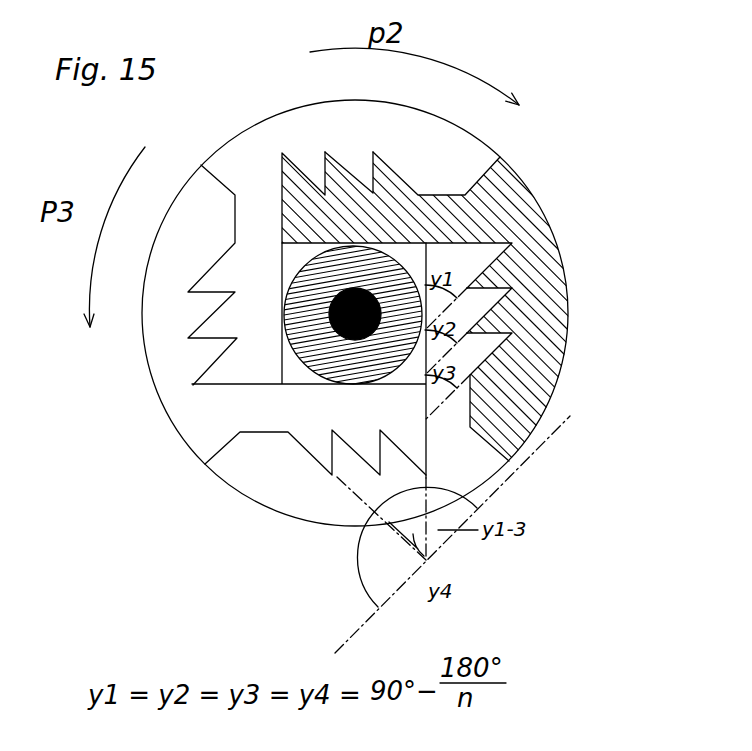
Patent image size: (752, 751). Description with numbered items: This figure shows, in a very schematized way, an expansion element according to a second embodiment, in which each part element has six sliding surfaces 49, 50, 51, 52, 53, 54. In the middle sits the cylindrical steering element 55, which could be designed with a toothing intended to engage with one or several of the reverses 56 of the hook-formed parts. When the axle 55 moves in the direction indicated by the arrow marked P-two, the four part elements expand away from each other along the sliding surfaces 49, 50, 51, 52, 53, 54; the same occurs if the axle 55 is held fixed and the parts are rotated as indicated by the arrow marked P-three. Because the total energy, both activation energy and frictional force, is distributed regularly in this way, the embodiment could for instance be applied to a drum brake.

The sliding surface 49 is at (287, 157).
The sliding surface 50 is at (333, 168).
The sliding surface 51 is at (388, 162).
The sliding surface 52 is at (512, 260).
The sliding surface 53 is at (518, 310).
The sliding surface 54 is at (513, 353).
The cylindrical steering element 55 is at (312, 318).
The reverse of the hook-formed part 56 is at (307, 247).